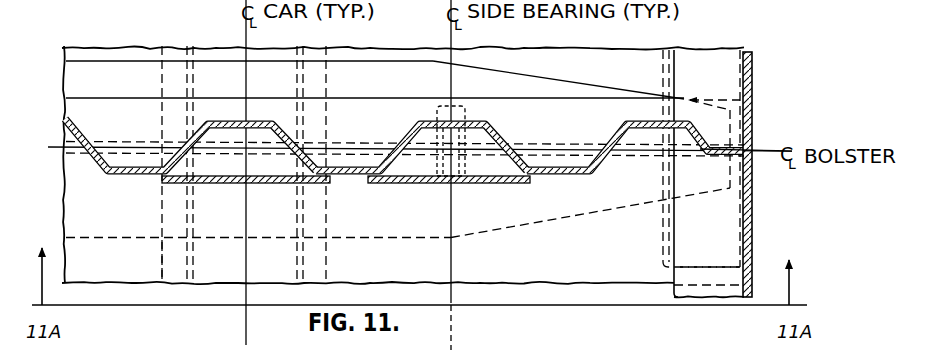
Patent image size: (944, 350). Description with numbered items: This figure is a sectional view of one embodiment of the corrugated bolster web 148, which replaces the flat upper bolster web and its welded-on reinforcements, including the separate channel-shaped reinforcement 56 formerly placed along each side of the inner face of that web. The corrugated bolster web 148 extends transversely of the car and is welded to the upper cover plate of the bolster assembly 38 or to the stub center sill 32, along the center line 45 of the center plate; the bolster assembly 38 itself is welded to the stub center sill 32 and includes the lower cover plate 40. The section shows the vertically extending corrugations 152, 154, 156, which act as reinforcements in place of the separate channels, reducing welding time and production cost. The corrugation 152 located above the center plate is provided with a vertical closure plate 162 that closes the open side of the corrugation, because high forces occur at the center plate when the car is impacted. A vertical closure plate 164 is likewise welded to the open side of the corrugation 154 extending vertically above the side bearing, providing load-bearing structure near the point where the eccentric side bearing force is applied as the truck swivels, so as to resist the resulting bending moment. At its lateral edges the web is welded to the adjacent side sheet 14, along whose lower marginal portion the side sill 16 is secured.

The side sheet 14 is at (754, 64).
The side sill 16 is at (715, 262).
The stub center sill 32 is at (187, 246).
The bolster assembly 38 is at (603, 81).
The lower cover plate 40 is at (643, 211).
The center line of center plate 45 is at (762, 148).
The channel-shaped reinforcement 56 is at (462, 110).
The corrugated bolster web 148 is at (404, 170).
The corrugation 152 is at (198, 129).
The corrugation 154 is at (411, 134).
The corrugation 156 is at (616, 135).
The vertical closure plate 162 is at (235, 185).
The vertical closure plate 164 is at (428, 186).